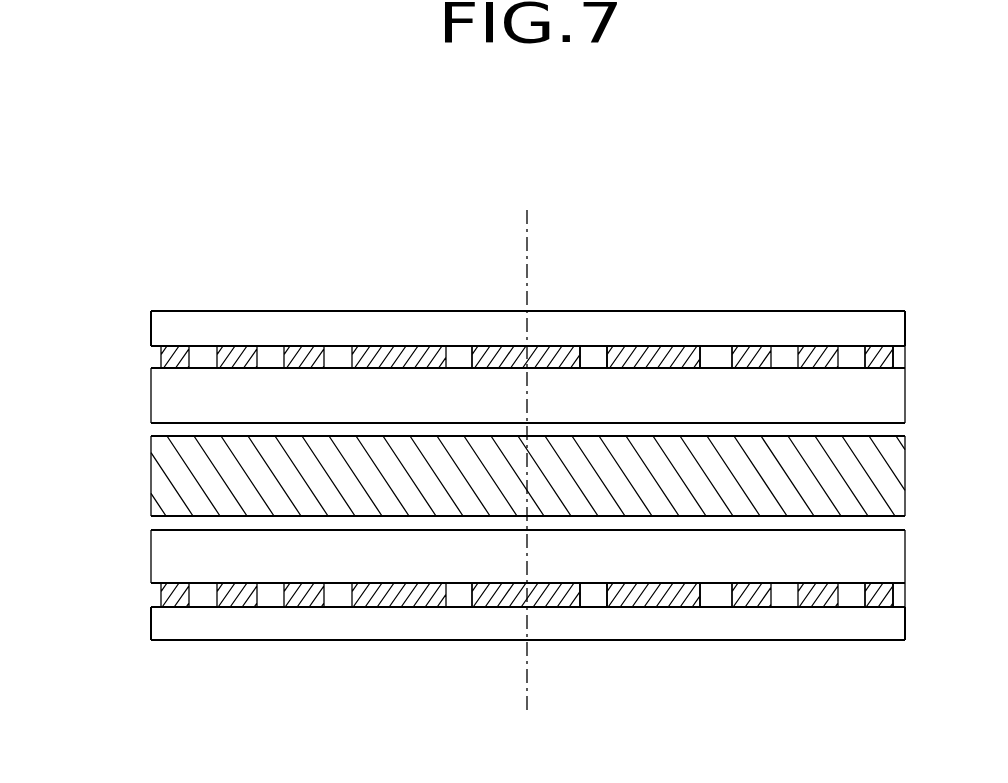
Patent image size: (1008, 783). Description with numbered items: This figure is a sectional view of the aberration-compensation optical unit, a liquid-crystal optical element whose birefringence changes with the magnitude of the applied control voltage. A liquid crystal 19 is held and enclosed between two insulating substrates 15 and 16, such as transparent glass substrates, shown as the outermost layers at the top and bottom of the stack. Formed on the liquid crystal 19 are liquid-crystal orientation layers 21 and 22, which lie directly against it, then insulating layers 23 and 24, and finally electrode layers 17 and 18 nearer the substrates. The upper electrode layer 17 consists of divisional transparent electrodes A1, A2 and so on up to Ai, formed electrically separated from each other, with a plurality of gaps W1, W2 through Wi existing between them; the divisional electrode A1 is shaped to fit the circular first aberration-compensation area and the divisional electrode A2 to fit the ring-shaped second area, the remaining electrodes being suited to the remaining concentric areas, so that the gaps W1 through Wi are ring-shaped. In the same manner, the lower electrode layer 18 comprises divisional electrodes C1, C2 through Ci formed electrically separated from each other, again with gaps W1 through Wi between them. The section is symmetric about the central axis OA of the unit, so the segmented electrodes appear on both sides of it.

The insulating substrate 15 is at (155, 328).
The insulating substrate 16 is at (155, 623).
The electrode layer 17 is at (155, 357).
The electrode layer 18 is at (155, 593).
The liquid crystal element 19 is at (157, 478).
The liquid-crystal orientation layer 21 is at (155, 427).
The liquid-crystal orientation layer 22 is at (155, 522).
The insulating layer 23 is at (155, 397).
The insulating layer 24 is at (155, 558).
The optical axis OA is at (528, 441).
The divisional electrode A1 is at (542, 347).
The divisional electrode A2 is at (657, 347).
The divisional electrode Ai is at (870, 347).
The divisional electrode C1 is at (537, 602).
The divisional electrode C2 is at (662, 602).
The divisional electrode Ci is at (873, 602).
The gap W1 is at (595, 352).
The gap W2 is at (713, 352).
The gap Wi is at (898, 352).